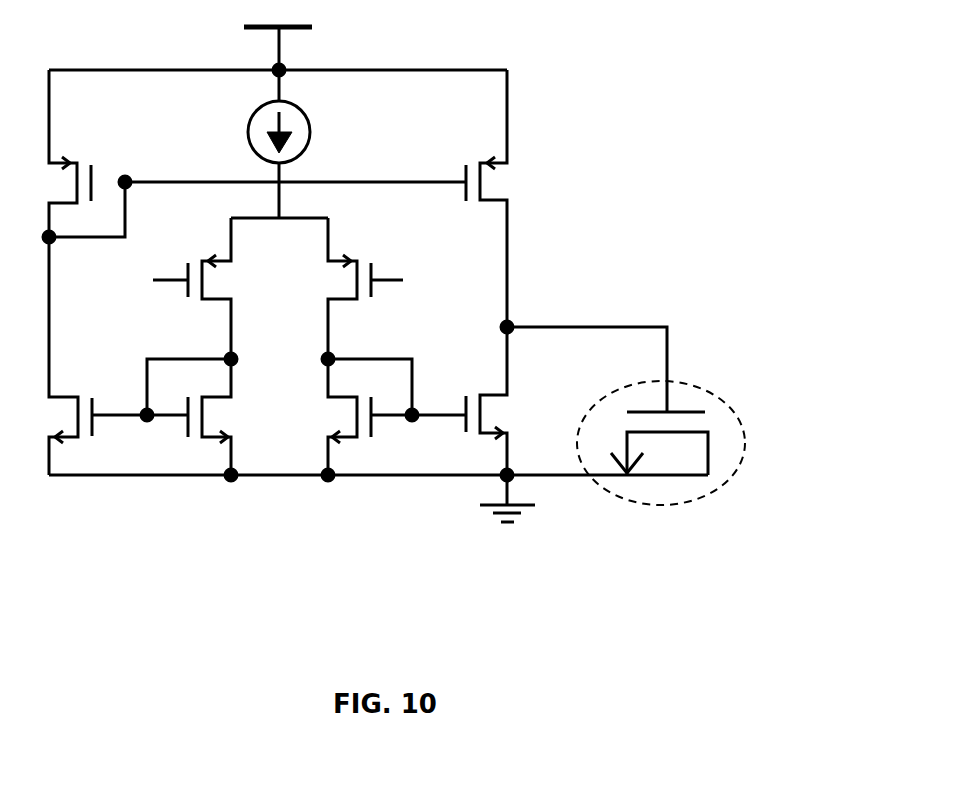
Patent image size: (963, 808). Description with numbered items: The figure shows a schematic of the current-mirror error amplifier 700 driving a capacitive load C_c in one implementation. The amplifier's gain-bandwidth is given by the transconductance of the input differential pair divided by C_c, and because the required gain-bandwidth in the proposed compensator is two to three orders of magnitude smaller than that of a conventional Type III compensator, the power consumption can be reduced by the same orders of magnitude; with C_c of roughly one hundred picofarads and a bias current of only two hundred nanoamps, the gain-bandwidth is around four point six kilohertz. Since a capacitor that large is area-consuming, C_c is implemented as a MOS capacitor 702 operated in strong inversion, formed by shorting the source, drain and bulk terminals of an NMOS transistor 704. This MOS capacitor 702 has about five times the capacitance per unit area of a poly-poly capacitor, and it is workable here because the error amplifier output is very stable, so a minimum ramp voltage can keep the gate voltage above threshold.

The current-mirror error amplifier 700 is at (313, 530).
The MOS capacitor 702 is at (740, 420).
The NMOS transistor 704 is at (527, 409).